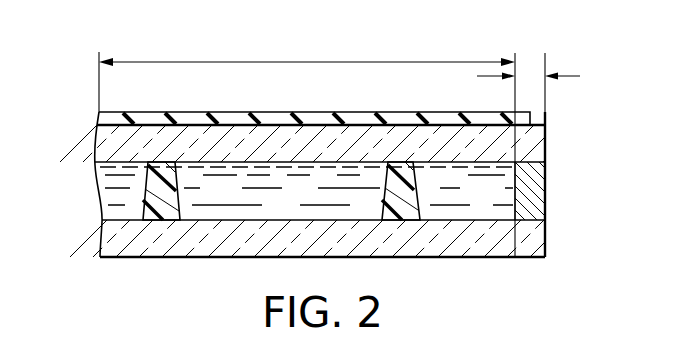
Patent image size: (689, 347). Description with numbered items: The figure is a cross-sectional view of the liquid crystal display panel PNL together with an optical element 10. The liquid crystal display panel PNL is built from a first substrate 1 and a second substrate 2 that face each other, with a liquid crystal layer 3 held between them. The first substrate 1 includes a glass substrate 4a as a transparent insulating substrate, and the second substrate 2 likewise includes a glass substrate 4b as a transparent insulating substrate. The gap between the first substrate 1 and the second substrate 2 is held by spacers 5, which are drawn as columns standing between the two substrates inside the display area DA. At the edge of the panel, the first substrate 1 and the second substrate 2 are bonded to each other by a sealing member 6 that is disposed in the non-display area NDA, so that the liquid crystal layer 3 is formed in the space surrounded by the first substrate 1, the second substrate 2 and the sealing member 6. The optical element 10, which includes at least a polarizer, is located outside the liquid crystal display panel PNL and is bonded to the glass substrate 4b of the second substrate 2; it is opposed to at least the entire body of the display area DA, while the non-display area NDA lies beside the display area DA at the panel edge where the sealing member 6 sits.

The first substrate 1 is at (285, 232).
The second substrate 2 is at (283, 140).
The liquid crystal layer 3 is at (108, 197).
The glass substrate 4a is at (118, 244).
The glass substrate 4b is at (103, 138).
The spacers 5 is at (178, 170).
The sealing member 6 is at (534, 190).
The optical element 10 is at (526, 112).
The display area DA is at (307, 72).
The non-display area NDA is at (530, 75).
The liquid crystal display panel PNL is at (566, 233).